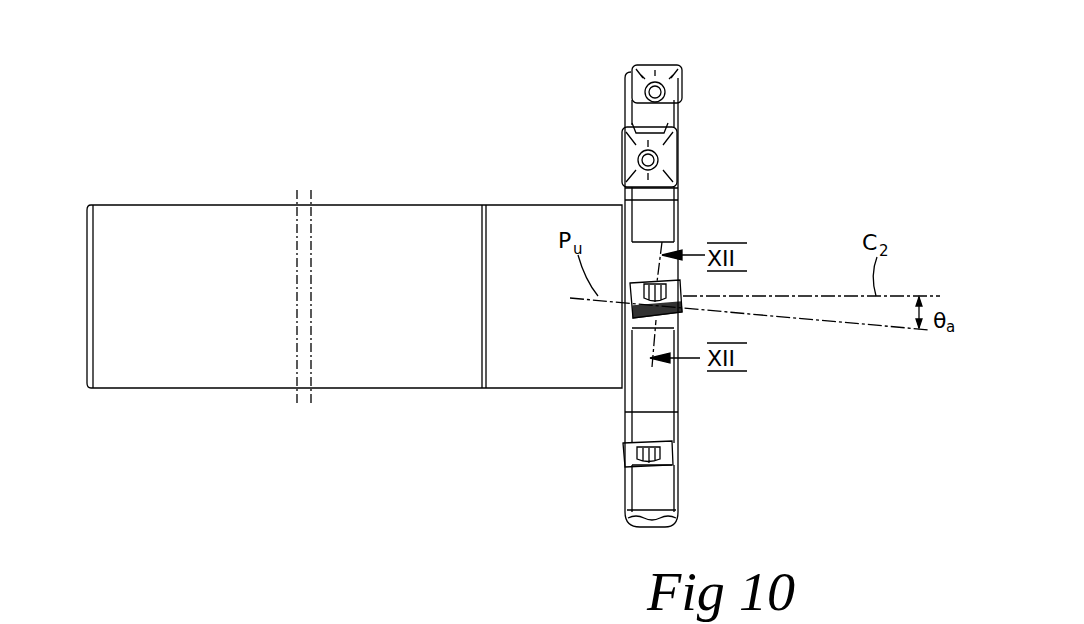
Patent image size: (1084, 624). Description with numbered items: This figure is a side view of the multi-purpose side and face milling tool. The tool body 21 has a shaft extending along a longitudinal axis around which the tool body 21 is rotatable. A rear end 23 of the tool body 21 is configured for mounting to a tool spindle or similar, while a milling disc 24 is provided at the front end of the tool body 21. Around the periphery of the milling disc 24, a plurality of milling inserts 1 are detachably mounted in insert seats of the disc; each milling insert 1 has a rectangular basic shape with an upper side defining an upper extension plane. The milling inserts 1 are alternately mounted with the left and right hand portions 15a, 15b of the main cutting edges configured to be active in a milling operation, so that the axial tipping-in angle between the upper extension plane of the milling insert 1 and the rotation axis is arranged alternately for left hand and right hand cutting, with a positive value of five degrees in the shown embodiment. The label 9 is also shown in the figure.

The milling insert 1 is at (649, 114).
The milling cutter head 9 is at (660, 65).
The left hand portion of the main cutting edge 15a is at (674, 66).
The right hand portion of the main cutting edge 15b is at (630, 127).
The tool body 21 is at (403, 372).
The rear end 23 is at (86, 270).
The milling disc 24 is at (667, 212).